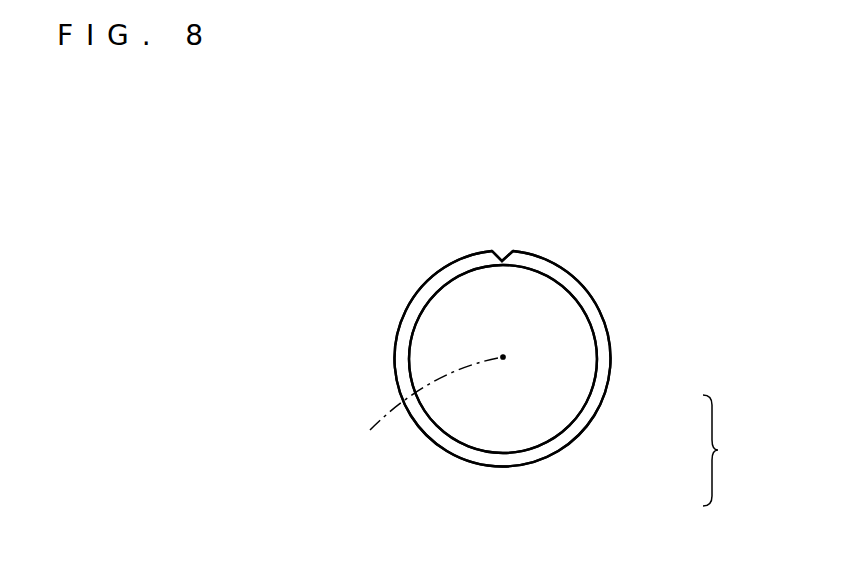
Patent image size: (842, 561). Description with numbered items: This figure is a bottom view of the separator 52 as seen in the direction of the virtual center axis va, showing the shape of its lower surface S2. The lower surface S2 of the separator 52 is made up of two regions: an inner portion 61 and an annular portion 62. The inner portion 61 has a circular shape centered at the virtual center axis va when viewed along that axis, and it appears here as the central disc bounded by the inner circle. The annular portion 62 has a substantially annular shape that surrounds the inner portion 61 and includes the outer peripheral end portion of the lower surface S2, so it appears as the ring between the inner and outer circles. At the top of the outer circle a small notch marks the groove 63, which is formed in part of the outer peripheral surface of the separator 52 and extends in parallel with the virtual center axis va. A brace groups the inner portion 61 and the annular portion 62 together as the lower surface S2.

The separator 52 is at (403, 251).
The groove 63 is at (502, 260).
The inner portion 61 is at (557, 363).
The annular portion 62 is at (577, 425).
The lower surface S2 is at (733, 450).
The virtual center axis va is at (417, 408).